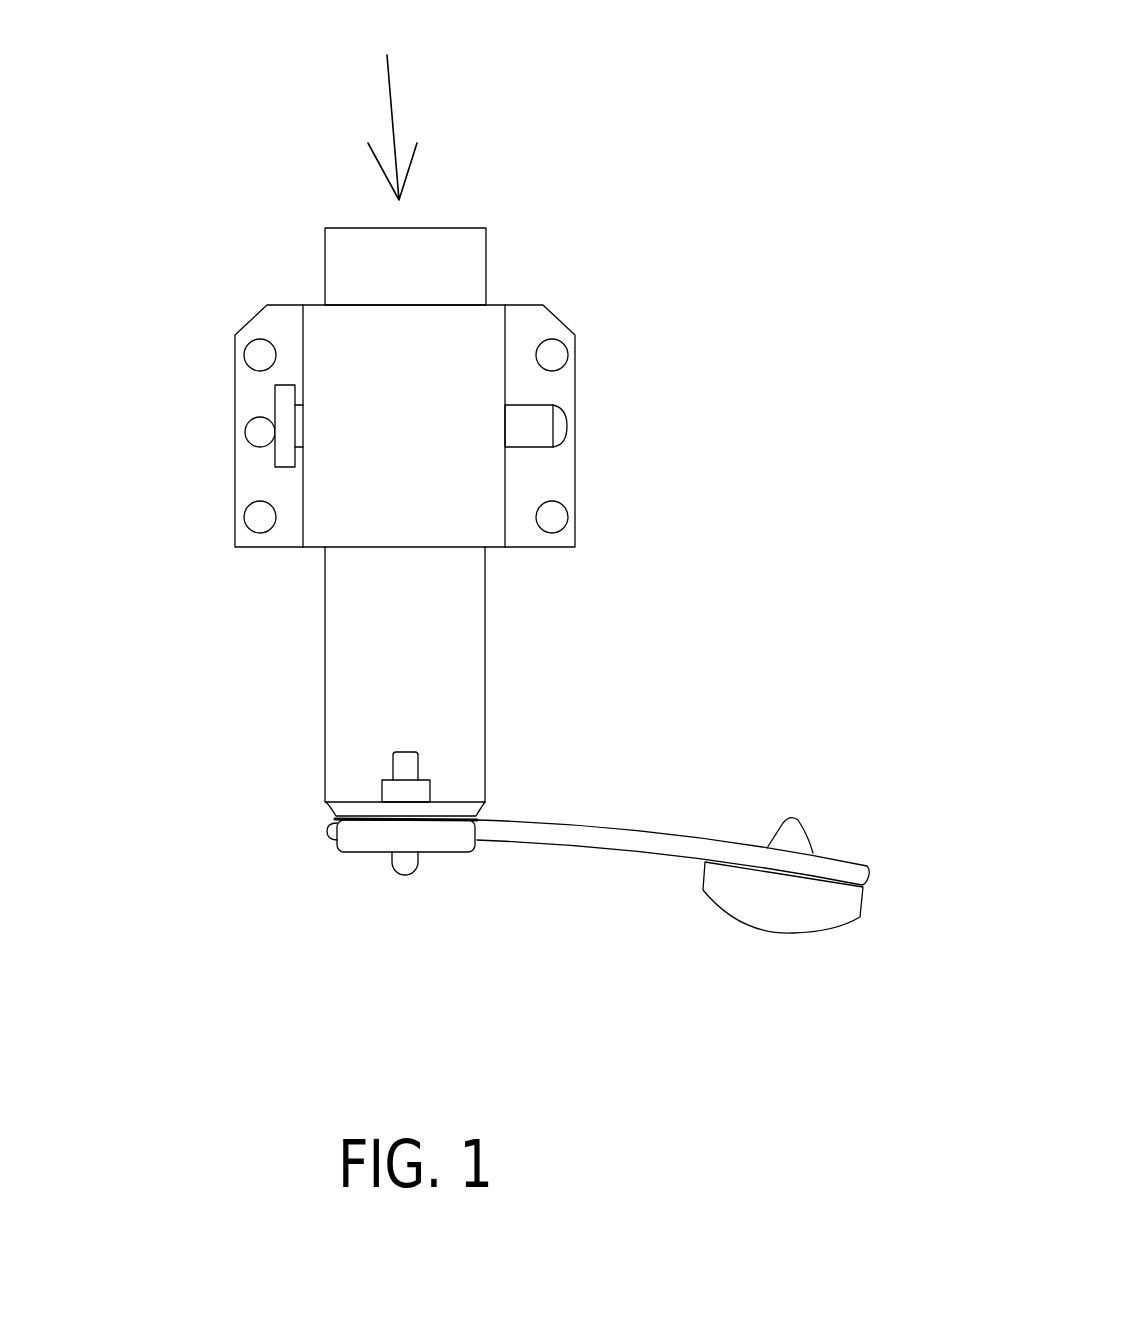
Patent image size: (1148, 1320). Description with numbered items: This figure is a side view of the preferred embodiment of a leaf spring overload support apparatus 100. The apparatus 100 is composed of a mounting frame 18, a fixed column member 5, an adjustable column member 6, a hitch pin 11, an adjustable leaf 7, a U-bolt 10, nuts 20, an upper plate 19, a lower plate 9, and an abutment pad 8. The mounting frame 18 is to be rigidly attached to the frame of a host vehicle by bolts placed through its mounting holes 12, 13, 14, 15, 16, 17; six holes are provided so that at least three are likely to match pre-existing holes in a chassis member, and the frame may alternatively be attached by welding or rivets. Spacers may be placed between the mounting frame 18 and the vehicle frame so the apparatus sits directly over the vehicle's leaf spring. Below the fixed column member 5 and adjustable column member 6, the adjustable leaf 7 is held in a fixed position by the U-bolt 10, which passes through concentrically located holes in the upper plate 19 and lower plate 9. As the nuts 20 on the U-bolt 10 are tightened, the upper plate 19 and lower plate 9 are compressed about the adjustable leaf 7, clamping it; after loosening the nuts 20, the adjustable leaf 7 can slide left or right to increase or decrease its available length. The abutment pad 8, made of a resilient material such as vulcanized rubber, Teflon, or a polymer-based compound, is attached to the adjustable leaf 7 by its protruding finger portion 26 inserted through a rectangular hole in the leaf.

The apparatus 100 is at (387, 100).
The fixed column member 5 is at (397, 372).
The mounting frame 18 is at (523, 320).
The mounting hole 12 is at (253, 353).
The mounting hole 13 is at (257, 427).
The mounting hole 14 is at (260, 518).
The mounting hole 15 is at (550, 355).
The mounting hole 17 is at (557, 525).
The hitch pin 11 is at (522, 423).
The mounting hole 16 is at (558, 447).
The adjustable column member 6 is at (408, 663).
The nut 20 is at (408, 790).
The upper plate 19 is at (355, 807).
The lower plate 9 is at (373, 837).
The U-bolt 10 is at (407, 867).
The adjustable leaf 7 is at (603, 838).
The protruding finger portion 26 is at (793, 833).
The abutment pad 8 is at (770, 893).